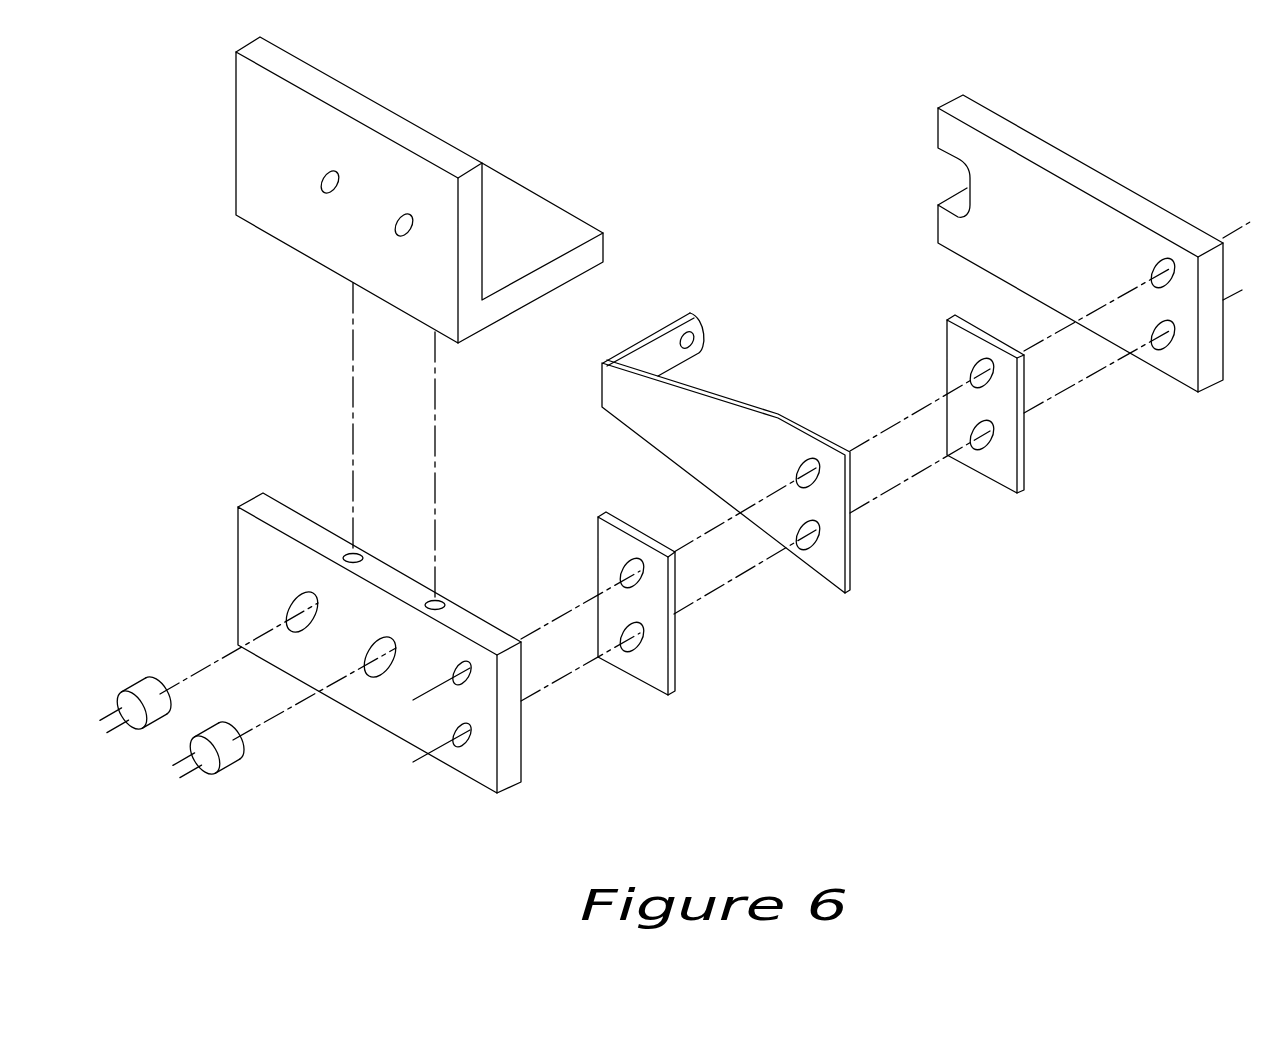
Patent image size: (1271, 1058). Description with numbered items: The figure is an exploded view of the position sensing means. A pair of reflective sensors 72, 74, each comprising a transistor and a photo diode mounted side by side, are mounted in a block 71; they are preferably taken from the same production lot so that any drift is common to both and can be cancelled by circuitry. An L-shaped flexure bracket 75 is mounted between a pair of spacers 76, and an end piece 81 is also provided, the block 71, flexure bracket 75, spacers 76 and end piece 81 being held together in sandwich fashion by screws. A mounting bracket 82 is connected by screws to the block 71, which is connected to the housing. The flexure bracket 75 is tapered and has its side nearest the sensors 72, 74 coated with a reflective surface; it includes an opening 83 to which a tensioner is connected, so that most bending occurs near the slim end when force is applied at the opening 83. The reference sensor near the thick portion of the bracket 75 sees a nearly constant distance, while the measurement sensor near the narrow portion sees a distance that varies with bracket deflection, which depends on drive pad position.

The block 71 is at (238, 548).
The reflective sensor 72 is at (235, 762).
The reflective sensor 74 is at (128, 682).
The L-shaped flexure bracket 75 is at (830, 550).
The spacers 76 is at (672, 665).
The end piece 81 is at (1183, 358).
The mounting bracket 82 is at (258, 213).
The opening 83 is at (698, 341).